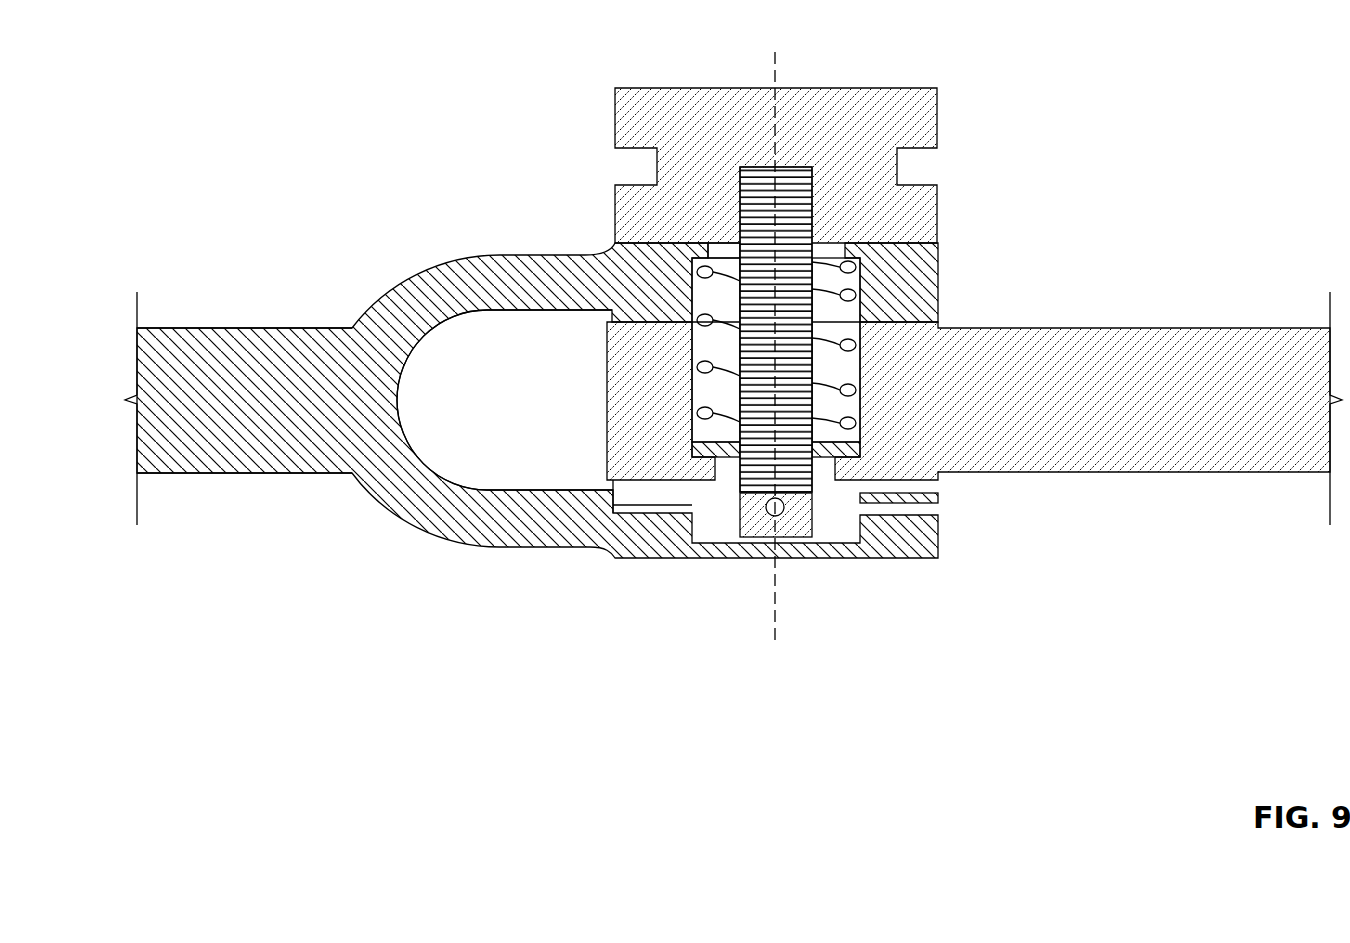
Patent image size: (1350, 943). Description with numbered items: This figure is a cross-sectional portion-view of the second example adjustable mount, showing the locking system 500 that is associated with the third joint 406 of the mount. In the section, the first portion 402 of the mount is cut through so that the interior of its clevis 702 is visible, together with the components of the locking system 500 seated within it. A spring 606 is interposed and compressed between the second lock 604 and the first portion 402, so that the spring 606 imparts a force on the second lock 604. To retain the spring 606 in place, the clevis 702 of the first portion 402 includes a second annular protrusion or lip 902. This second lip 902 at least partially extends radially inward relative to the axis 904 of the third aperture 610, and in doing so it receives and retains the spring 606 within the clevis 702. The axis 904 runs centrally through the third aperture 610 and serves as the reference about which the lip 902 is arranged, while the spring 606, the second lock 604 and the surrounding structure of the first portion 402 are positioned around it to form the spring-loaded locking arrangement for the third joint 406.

The first portion 402 is at (246, 416).
The third joint 406 is at (484, 187).
The locking system 500 is at (940, 167).
The second lock 604 is at (860, 456).
The spring 606 is at (850, 352).
The third aperture 610 is at (722, 240).
The clevis 702 is at (405, 360).
The second annular protrusion or lip 902 is at (846, 243).
The axis 904 is at (778, 82).